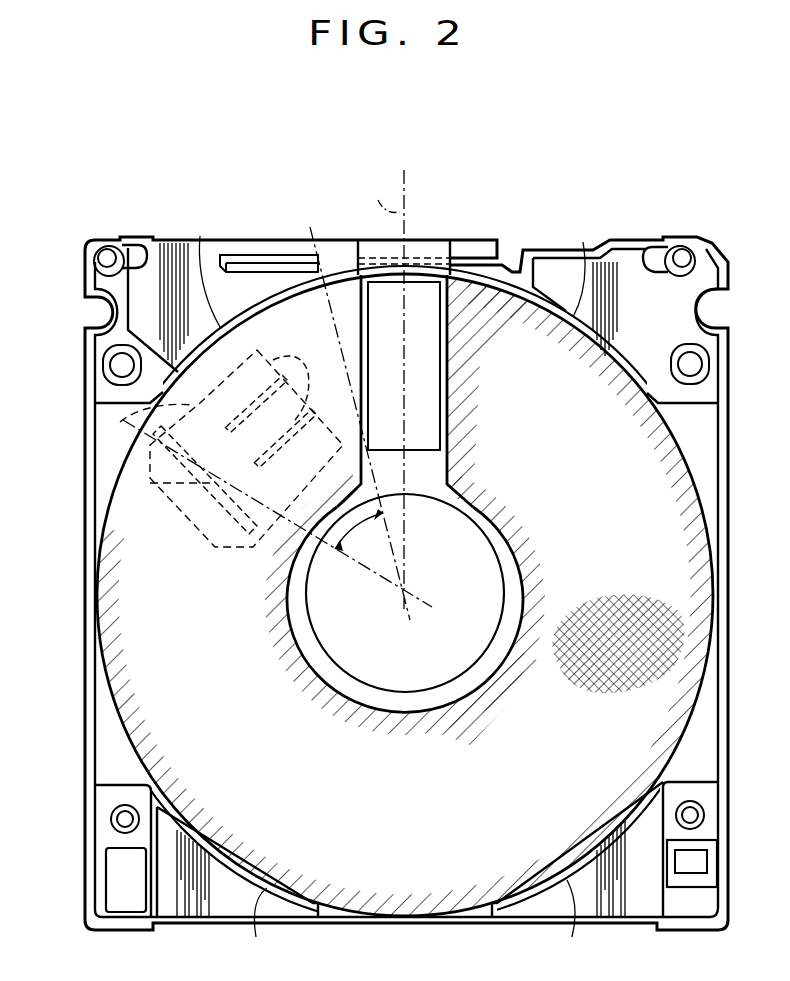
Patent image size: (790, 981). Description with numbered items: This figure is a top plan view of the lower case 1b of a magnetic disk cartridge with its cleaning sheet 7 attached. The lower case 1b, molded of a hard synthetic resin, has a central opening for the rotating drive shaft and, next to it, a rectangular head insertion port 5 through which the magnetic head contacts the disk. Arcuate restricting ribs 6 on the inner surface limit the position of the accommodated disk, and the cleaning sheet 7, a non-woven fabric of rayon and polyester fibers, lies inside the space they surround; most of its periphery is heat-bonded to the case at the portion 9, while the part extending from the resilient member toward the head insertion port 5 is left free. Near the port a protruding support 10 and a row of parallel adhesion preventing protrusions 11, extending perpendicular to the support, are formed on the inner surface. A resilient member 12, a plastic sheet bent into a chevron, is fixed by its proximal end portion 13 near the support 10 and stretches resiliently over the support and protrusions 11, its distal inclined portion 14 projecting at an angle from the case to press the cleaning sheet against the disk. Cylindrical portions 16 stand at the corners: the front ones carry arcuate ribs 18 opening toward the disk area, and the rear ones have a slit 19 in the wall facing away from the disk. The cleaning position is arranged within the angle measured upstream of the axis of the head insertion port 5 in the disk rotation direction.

The lower case 1b is at (622, 262).
The head insertion port 5 is at (436, 340).
The restricting ribs 6 is at (392, 586).
The cleaning sheet 7 is at (657, 642).
The heat-bonded portion 9 is at (690, 500).
The protruding support 10 is at (150, 482).
The adhesion preventing protrusions 11 is at (300, 375).
The resilient member 12 is at (178, 448).
The inclined portion 14 is at (178, 448).
The proximal end portion 13 is at (183, 520).
The cylindrical portions 16 is at (105, 243).
The arcuate ribs 18 is at (132, 262).
The slit 19 is at (113, 832).